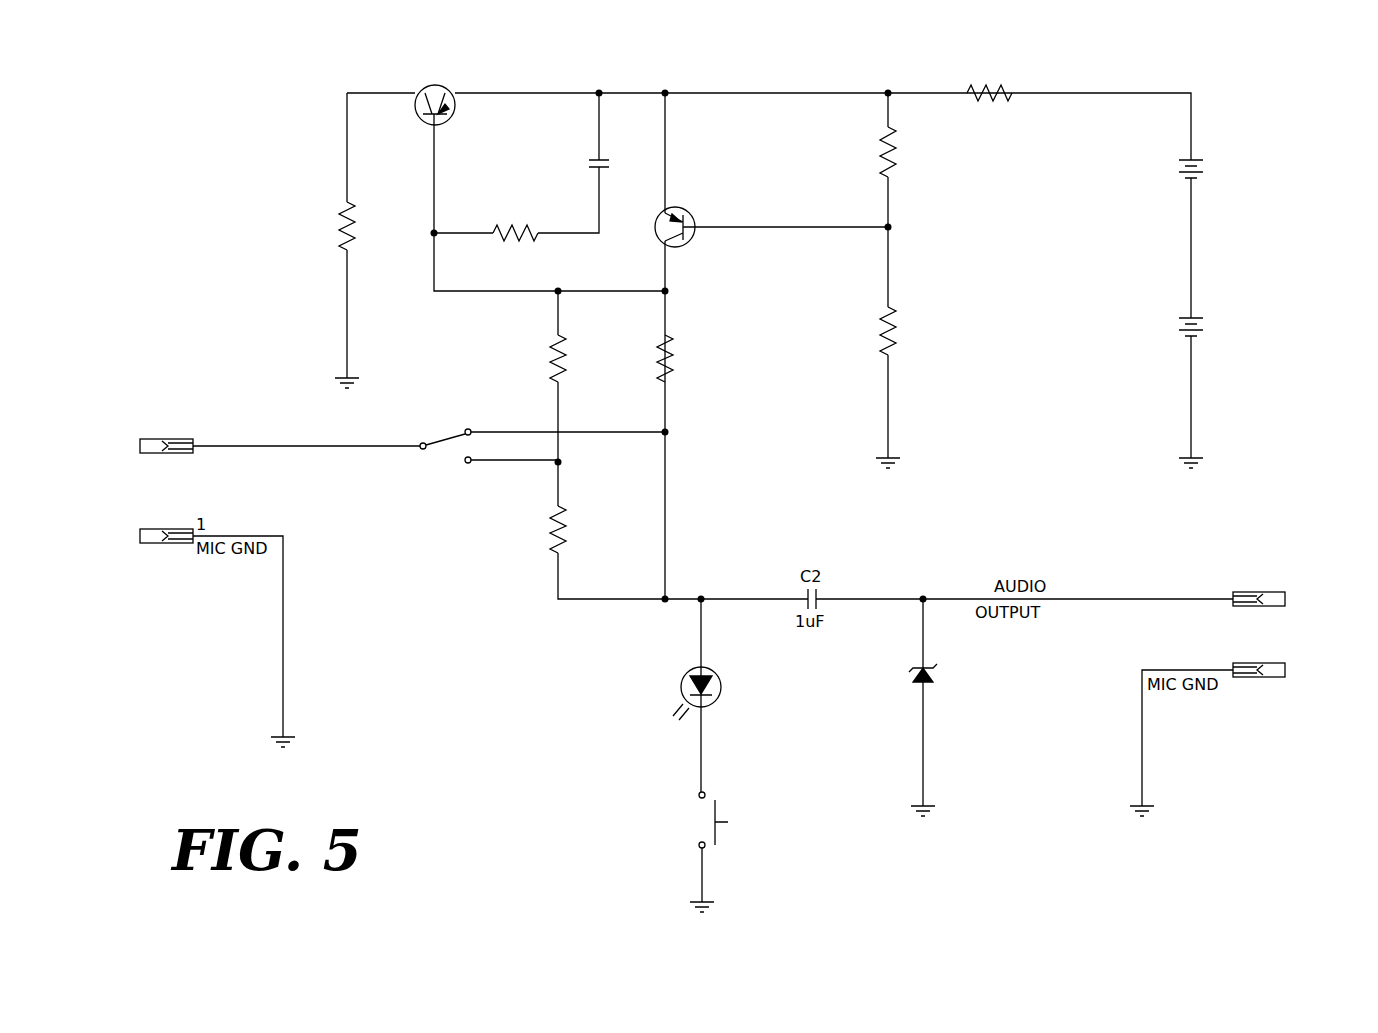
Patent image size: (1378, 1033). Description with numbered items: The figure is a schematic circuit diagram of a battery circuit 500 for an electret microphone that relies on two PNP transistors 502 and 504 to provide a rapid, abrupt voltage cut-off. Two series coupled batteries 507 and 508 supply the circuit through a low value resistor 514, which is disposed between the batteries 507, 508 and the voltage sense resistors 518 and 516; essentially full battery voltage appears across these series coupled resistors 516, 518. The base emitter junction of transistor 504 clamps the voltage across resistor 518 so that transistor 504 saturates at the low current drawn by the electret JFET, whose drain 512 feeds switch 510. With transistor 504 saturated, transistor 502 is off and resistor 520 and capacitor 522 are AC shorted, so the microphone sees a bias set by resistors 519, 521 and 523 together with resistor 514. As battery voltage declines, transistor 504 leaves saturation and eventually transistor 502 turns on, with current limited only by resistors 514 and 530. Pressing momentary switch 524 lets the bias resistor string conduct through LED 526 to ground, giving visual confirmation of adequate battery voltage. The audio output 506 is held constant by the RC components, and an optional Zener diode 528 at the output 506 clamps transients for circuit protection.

The battery circuit 500 is at (493, 683).
The PNP transistor 502 is at (440, 125).
The PNP transistor 504 is at (695, 235).
The audio output 506 is at (1285, 596).
The battery 507 is at (1178, 168).
The battery 508 is at (1178, 325).
The switch 510 is at (466, 428).
The drain 512 is at (168, 437).
The resistor 514 is at (1010, 90).
The resistor 516 is at (886, 311).
The resistor 518 is at (894, 155).
The resistor 519 is at (562, 350).
The resistor 520 is at (540, 240).
The resistor 521 is at (668, 372).
The capacitor 522 is at (596, 165).
The resistor 523 is at (547, 545).
The momentary switch 524 is at (735, 832).
The LED 526 is at (718, 697).
The Zener diode 528 is at (936, 680).
The resistor 530 is at (352, 218).